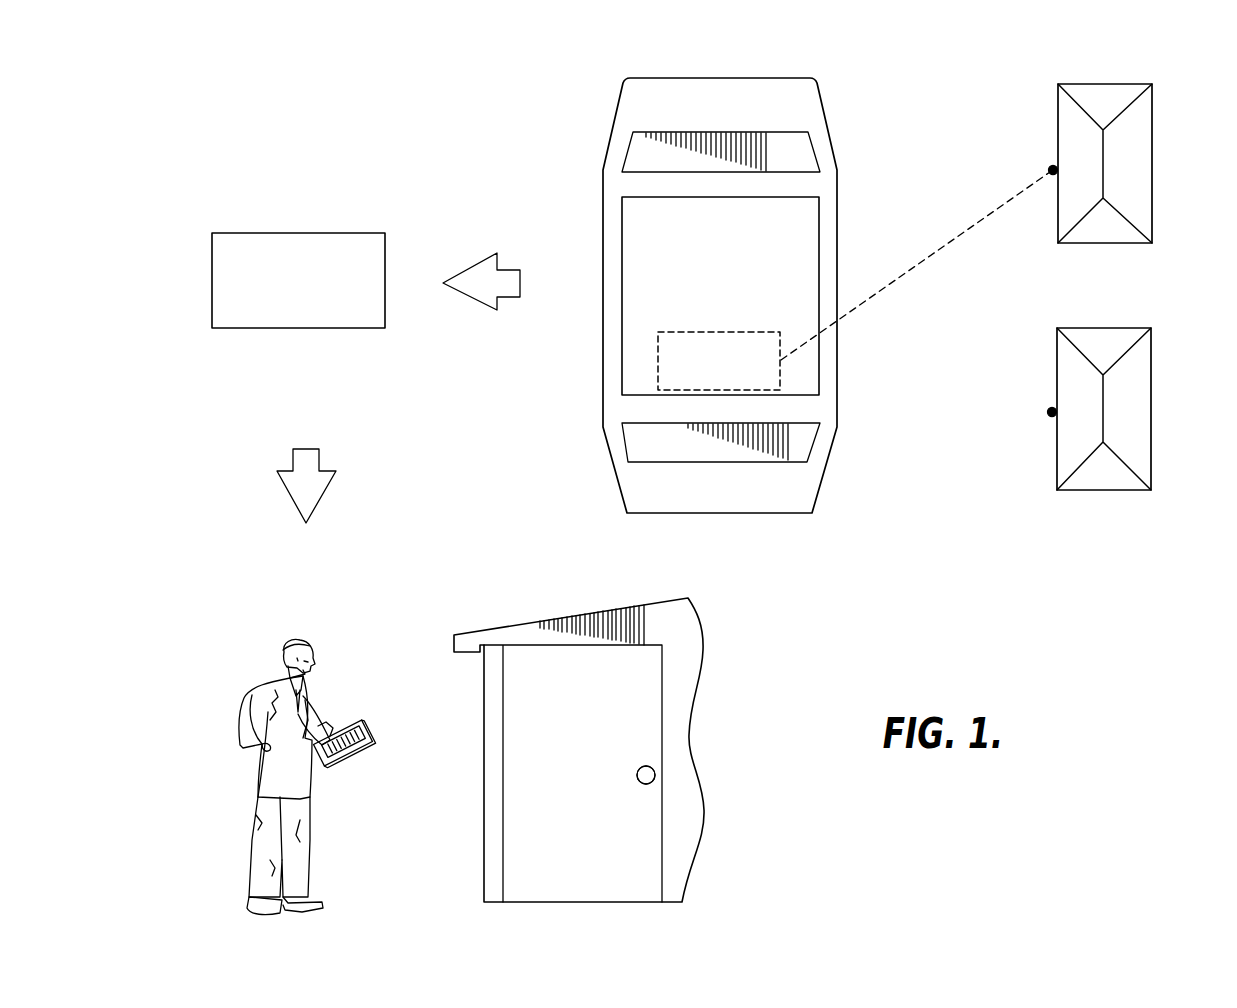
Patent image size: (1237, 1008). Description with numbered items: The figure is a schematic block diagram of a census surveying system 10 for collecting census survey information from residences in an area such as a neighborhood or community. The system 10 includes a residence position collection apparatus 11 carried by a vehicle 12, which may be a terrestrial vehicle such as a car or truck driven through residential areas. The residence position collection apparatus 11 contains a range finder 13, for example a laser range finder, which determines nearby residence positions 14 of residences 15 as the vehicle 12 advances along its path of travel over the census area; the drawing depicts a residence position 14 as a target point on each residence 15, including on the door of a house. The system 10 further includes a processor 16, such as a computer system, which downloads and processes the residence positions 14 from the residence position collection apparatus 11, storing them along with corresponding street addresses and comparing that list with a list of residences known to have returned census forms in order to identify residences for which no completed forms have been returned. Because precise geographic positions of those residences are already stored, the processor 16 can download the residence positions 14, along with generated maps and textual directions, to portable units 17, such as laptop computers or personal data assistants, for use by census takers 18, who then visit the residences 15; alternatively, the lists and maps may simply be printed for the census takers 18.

The census surveying system 10 is at (415, 120).
The residence position collection apparatus 11 is at (820, 233).
The vehicle 12 is at (820, 101).
The range finder 13 is at (658, 361).
The residence position 14 is at (1050, 169).
The residence 15 is at (1152, 170).
The processor 16 is at (372, 233).
The portable unit 17 is at (351, 726).
The census taker 18 is at (258, 678).